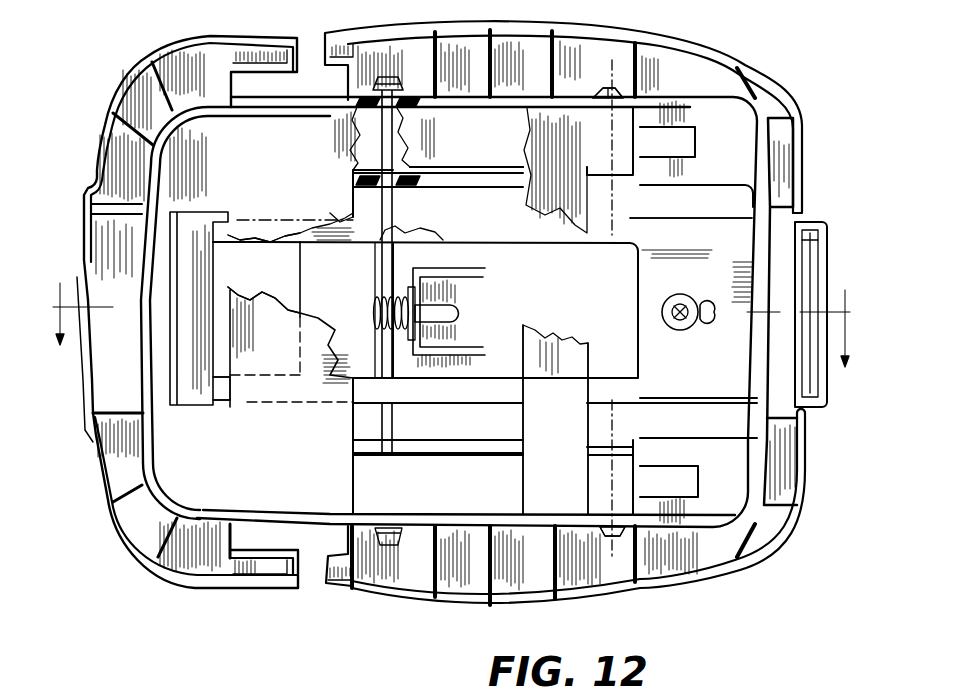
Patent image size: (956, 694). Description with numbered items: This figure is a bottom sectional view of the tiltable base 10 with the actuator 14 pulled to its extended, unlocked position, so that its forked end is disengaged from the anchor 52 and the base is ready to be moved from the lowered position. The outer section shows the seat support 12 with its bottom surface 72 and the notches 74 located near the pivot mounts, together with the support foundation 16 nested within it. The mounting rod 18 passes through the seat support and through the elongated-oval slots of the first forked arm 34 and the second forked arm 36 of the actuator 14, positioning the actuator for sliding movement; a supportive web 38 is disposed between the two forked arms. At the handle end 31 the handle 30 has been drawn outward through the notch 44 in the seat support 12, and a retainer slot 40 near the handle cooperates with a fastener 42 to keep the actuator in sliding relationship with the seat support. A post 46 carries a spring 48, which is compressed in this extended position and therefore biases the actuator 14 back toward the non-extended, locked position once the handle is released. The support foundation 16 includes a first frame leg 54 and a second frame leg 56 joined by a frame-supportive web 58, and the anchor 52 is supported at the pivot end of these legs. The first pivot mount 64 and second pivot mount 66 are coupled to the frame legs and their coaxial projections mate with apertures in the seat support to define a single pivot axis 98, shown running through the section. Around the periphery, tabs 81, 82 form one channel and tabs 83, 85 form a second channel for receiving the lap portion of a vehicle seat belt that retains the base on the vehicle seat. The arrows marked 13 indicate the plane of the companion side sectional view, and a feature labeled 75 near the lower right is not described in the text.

The tiltable base 10 is at (149, 50).
The seat support 12 is at (686, 584).
The section line 13- 13 is at (449, 308).
The actuator 14 is at (743, 368).
The support foundation 16 is at (313, 463).
The mounting rod 18 is at (384, 136).
The handle 30 is at (808, 240).
The handle end 31 is at (730, 235).
The first forked arm 34 is at (256, 230).
The second forked arm 36 is at (243, 395).
The supportive web 38 is at (306, 305).
The retainer slot 40 is at (707, 306).
The fastener 42 is at (680, 320).
The notch 44 is at (804, 416).
The post 46 is at (456, 313).
The spring 48 is at (384, 312).
The anchor 52 is at (202, 272).
The first frame leg 54 is at (502, 156).
The second frame leg 56 is at (528, 496).
The frame-supportive web 58 is at (292, 358).
The first pivot mount 64 is at (617, 80).
The second pivot mount 66 is at (612, 553).
The bottom surface 72 is at (744, 118).
The notches 74 is at (668, 148).
The lower slot 75 is at (677, 481).
The tab 81 is at (278, 575).
The tab 82 is at (342, 571).
The tab 83 is at (280, 52).
The tab 85 is at (340, 48).
The pivot axis 98 is at (644, 127).